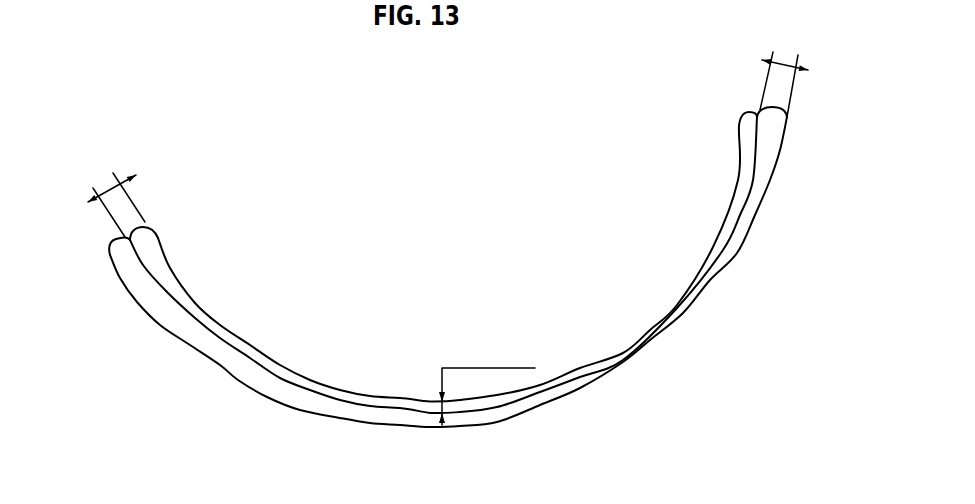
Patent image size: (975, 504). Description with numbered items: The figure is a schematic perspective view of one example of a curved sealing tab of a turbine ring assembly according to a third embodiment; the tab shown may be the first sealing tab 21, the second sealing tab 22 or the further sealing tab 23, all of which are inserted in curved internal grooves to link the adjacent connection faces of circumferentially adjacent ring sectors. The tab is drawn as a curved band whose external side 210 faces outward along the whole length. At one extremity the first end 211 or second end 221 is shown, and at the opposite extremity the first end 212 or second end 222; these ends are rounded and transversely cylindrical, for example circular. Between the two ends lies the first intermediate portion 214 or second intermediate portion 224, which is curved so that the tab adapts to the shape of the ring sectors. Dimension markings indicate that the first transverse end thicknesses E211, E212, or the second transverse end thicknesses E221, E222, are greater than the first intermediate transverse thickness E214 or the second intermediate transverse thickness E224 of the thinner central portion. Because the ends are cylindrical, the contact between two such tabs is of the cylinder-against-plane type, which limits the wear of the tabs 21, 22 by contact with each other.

The external side 210 is at (305, 376).
The first curved sealing tab 21 is at (435, 267).
The second curved sealing tab 22 is at (435, 267).
The sealing tab 23 is at (354, 398).
The first end 211 is at (77, 233).
The second end 221 is at (124, 240).
The first end 212 is at (707, 110).
The second end 222 is at (752, 122).
The first intermediate portion 214 is at (539, 438).
The second intermediate portion 224 is at (495, 414).
The first transverse end thickness E211 is at (90, 187).
The second transverse end thickness E221 is at (113, 180).
The first transverse end thickness E212 is at (756, 61).
The second transverse end thickness E222 is at (794, 26).
The first intermediate transverse thickness E214 is at (487, 385).
The second intermediate transverse thickness E224 is at (487, 385).